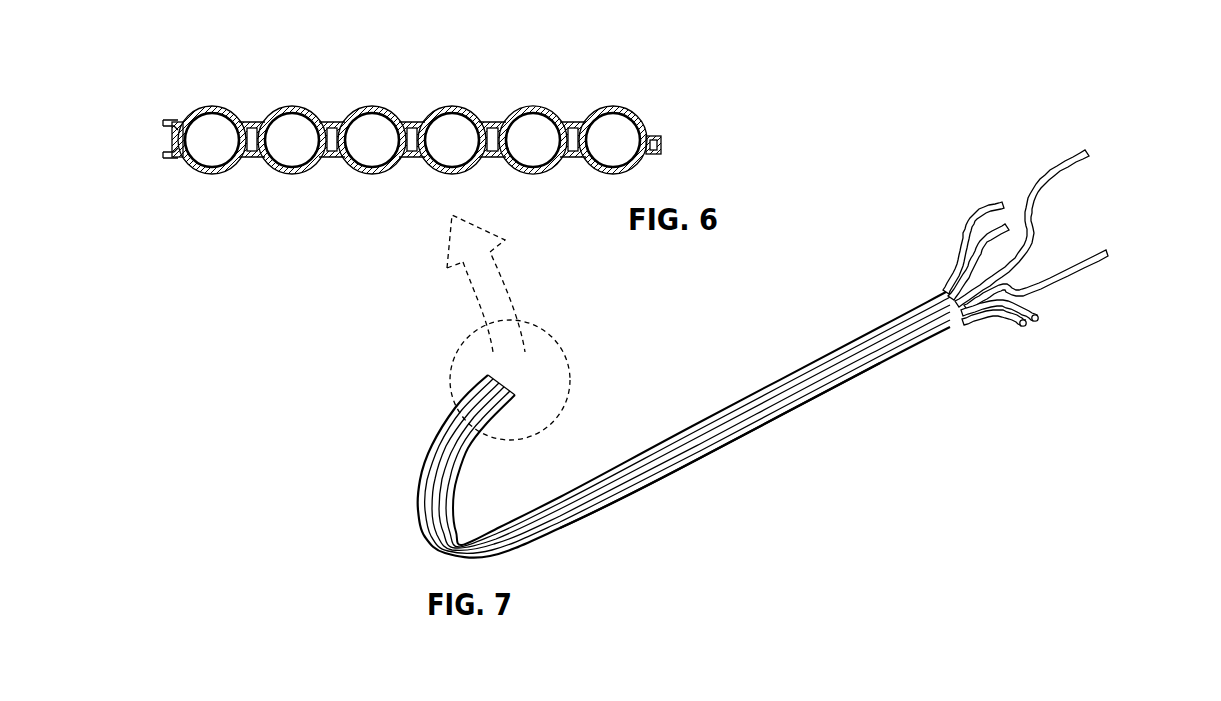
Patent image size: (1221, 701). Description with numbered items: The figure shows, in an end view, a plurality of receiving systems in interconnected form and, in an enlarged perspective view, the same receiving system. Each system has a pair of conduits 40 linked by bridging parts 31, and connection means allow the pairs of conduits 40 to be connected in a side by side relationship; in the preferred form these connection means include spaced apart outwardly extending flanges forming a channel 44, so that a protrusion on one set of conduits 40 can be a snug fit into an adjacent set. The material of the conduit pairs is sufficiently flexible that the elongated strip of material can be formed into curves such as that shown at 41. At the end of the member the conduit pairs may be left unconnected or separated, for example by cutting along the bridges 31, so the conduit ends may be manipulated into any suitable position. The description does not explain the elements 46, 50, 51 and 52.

In FIG. 6, the connecting web 31 is at (569, 108).
In FIG. 6, the insulating tube 40 is at (238, 95).
In FIG. 6, the conductor wire 41 is at (511, 108).
In FIG. 7, the conductor wire 41 is at (1090, 150).
In FIG. 6, the left end tab 44 is at (160, 137).
In FIG. 6, the right end tab 46 is at (658, 144).
In FIG. 7, the flat cable 50 is at (420, 460).
In FIG. 7, the cable body 51 is at (755, 431).
In FIG. 7, the stripped end 52 is at (1050, 245).